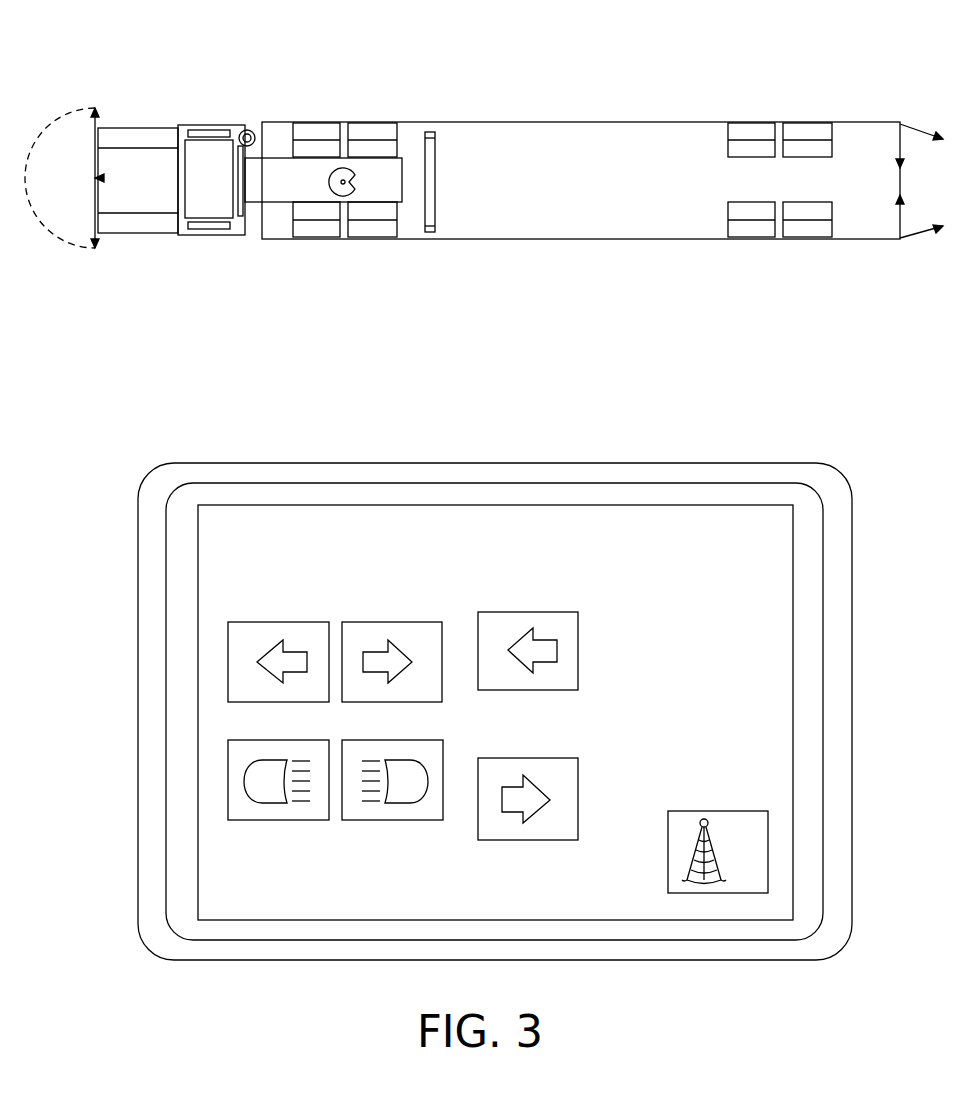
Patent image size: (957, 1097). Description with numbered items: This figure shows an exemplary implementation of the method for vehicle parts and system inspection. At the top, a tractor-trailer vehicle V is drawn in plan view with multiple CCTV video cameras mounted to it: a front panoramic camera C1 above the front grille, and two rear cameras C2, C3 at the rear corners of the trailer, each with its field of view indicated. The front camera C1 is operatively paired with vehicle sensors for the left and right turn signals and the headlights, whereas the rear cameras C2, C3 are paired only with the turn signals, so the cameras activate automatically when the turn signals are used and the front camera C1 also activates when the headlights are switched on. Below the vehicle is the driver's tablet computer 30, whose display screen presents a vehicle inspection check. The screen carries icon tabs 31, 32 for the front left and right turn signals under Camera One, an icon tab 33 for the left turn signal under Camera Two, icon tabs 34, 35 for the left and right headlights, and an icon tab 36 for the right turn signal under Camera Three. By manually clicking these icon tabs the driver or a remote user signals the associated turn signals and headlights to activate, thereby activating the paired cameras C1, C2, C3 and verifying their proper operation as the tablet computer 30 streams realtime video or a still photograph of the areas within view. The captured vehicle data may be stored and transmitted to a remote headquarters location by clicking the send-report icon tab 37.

The vehicle V is at (596, 118).
The front camera C1 is at (78, 178).
The rear camera C2 is at (904, 156).
The rear camera C3 is at (904, 218).
The tablet computer 30 is at (841, 470).
The icon tab 31 is at (228, 671).
The icon tab 32 is at (442, 622).
The icon tab 33 is at (578, 642).
The icon tab 34 is at (228, 805).
The icon tab 35 is at (443, 808).
The icon tab 36 is at (578, 778).
The icon tab 37 is at (704, 811).